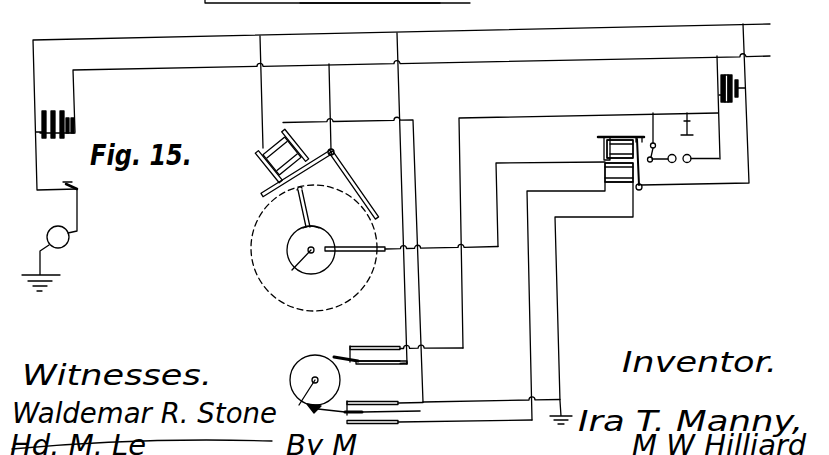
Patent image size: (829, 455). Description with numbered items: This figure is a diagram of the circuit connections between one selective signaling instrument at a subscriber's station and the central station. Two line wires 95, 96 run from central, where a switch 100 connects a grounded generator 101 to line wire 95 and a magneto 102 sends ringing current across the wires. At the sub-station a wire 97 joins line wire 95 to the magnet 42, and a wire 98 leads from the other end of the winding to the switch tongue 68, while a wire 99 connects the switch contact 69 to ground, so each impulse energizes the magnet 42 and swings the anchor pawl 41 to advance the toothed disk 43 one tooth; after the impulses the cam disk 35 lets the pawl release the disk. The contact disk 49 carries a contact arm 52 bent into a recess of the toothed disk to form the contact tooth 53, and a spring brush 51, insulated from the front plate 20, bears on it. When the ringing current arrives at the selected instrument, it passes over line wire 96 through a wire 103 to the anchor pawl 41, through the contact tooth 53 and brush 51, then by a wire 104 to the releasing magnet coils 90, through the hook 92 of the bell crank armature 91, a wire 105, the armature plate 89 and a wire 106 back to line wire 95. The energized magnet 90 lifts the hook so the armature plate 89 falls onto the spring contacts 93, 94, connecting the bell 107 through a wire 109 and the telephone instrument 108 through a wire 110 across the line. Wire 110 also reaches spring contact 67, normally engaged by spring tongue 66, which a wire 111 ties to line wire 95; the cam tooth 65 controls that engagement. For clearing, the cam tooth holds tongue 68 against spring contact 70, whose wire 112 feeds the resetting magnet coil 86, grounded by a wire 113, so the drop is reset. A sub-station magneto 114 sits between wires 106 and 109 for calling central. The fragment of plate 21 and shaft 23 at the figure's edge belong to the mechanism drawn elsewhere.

The front plate 20 is at (414, 3).
The shaft 21 is at (298, 3).
The shaft 23 is at (300, 284).
The cam disk 35 is at (292, 372).
The anchor pawl 41 is at (345, 173).
The magnet 42 is at (273, 140).
The toothed disk 43 is at (256, 287).
The disk 49 is at (320, 241).
The spring brush 51 is at (362, 253).
The contact arm 52 is at (307, 214).
The contact tooth 53 is at (304, 186).
The cam tooth 65 is at (343, 363).
The spring tongue 66 is at (389, 366).
The spring contact 67 is at (370, 345).
The switch tongue 68 is at (320, 414).
The switch contact 69 is at (360, 404).
The spring contact 70 is at (358, 424).
The resetting magnet coil 86 is at (620, 179).
The armature plate 89 is at (643, 175).
The releasing magnet coils 90 is at (612, 144).
The bell crank armature 91 is at (604, 146).
The hook 92 is at (639, 129).
The spring contact 93 is at (667, 149).
The spring contact 94 is at (665, 130).
The line wire 95 is at (130, 29).
The line wire 96 is at (133, 70).
The wire 97 is at (258, 94).
The wire 98 is at (415, 192).
The wire 99 is at (467, 400).
The switch 100 is at (80, 187).
The grounded generator 101 is at (71, 238).
The magneto 102 is at (80, 120).
The wire 103 is at (331, 98).
The wire 104 is at (496, 218).
The wire 105 is at (606, 136).
The wire 106 is at (688, 184).
The bell 107 is at (690, 163).
The telephone instrument 108 is at (690, 127).
The wire 109 is at (716, 75).
The wire 110 is at (488, 119).
The wire 111 is at (404, 298).
The wire 112 is at (527, 296).
The wire 113 is at (555, 296).
The magneto 114 is at (740, 90).